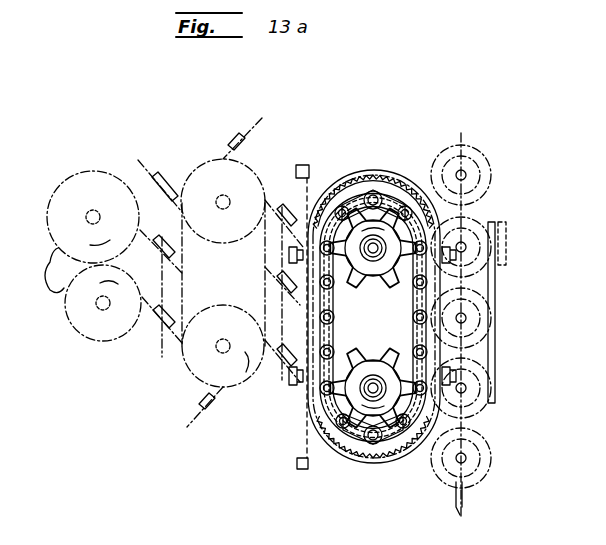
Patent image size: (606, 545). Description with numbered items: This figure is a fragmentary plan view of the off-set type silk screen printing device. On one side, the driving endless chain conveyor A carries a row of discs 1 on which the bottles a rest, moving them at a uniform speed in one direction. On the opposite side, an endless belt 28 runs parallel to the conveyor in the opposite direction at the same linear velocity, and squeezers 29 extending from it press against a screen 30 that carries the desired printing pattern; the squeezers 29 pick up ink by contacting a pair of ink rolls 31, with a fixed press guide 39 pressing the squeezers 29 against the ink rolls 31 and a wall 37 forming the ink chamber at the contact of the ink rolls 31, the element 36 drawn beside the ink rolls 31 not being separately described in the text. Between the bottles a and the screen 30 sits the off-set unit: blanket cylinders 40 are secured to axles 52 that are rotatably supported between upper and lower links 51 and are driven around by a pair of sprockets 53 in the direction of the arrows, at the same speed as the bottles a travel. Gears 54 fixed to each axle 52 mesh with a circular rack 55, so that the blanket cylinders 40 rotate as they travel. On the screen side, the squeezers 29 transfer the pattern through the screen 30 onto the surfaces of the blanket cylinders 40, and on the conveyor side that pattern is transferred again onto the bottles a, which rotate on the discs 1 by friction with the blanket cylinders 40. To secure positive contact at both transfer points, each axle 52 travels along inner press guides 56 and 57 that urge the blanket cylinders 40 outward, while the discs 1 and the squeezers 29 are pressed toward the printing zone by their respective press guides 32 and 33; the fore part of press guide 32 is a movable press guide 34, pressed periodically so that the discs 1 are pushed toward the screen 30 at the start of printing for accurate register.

The disc 1 is at (485, 330).
The endless belt 28 is at (265, 292).
The squeezer 29 is at (264, 114).
The screen 30 is at (307, 438).
The ink roll 31 is at (90, 327).
The press guide 32 is at (495, 352).
The press guide 33 is at (279, 340).
The movable press guide 34 is at (496, 224).
The scraper 36 is at (58, 282).
The wall 37 is at (47, 262).
The fixed press guide 39 is at (157, 350).
The blanket cylinder 40 is at (382, 192).
The link 51 is at (396, 434).
The axle 52 is at (371, 178).
The sprocket 53 is at (393, 233).
The gear 54 is at (398, 182).
The circular rack 55 is at (336, 190).
The inner press guide 56 is at (303, 388).
The inner press guide 57 is at (470, 368).
The bottle a is at (477, 300).
The driving endless chain conveyor A is at (465, 424).